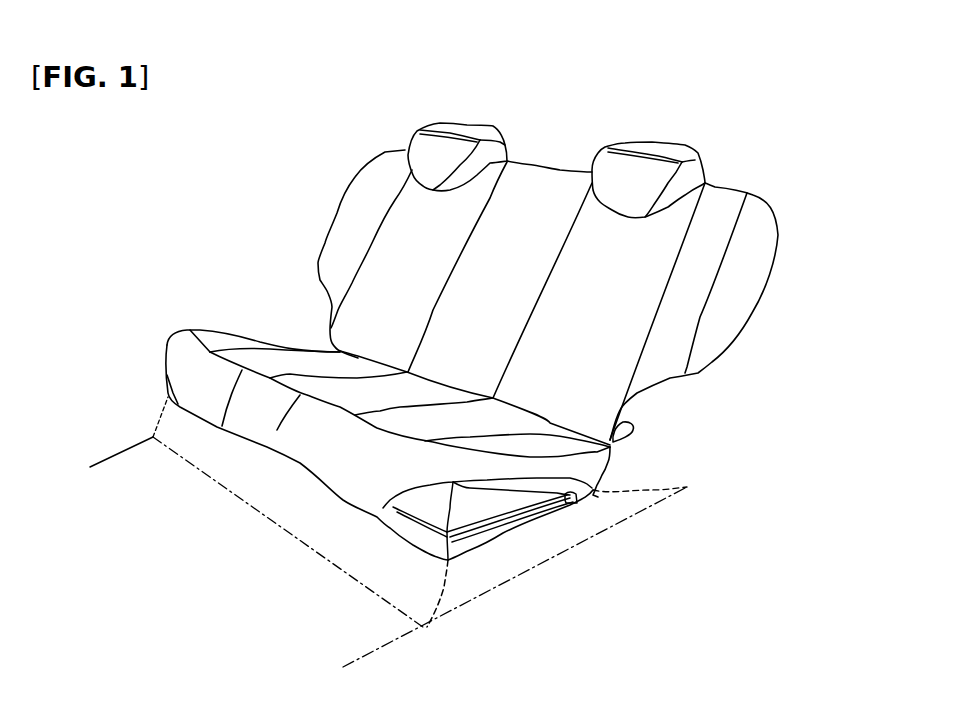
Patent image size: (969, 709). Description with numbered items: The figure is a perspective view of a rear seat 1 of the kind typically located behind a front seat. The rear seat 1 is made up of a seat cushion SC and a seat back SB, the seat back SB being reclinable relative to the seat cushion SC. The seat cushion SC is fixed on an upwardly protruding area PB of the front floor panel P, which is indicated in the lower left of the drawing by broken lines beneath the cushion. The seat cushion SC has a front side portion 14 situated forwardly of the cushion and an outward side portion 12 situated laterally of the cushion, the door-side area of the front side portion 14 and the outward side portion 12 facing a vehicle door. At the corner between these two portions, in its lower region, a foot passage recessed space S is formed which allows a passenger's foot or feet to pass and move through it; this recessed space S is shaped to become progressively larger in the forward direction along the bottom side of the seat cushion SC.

The rear seat 1 is at (312, 254).
The seat back SB is at (762, 318).
The seat cushion SC is at (625, 463).
The front floor panel P is at (128, 449).
The upwardly protruding area PB is at (248, 482).
The front side portion 14 is at (420, 422).
The outward side portion 12 is at (593, 492).
The foot passage recessed space S is at (470, 508).